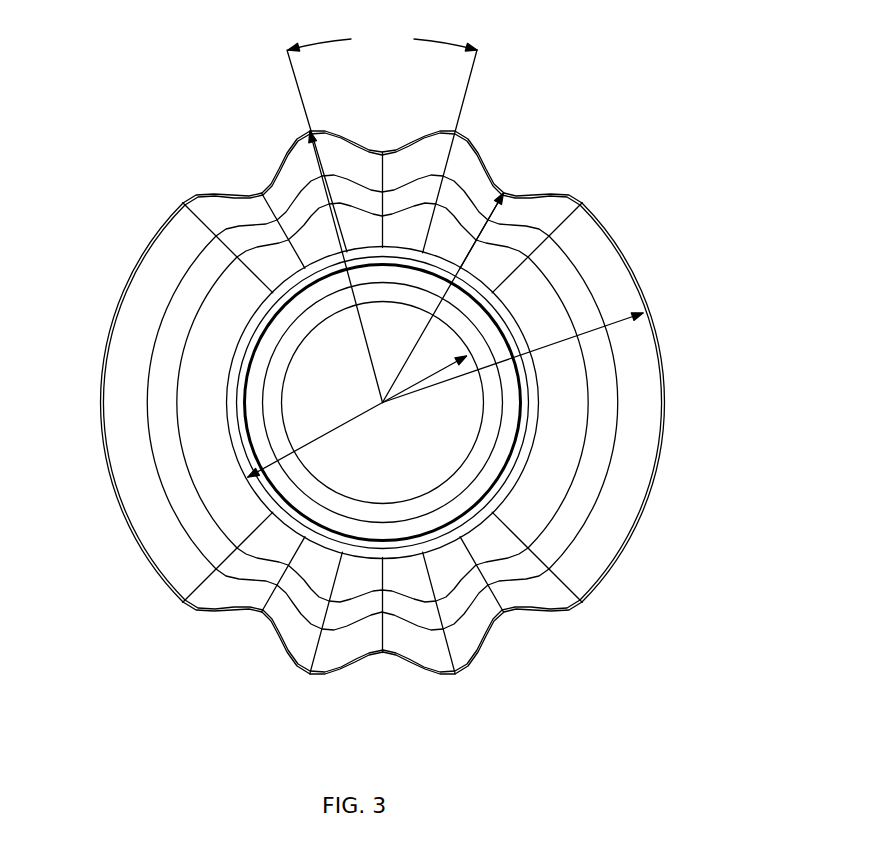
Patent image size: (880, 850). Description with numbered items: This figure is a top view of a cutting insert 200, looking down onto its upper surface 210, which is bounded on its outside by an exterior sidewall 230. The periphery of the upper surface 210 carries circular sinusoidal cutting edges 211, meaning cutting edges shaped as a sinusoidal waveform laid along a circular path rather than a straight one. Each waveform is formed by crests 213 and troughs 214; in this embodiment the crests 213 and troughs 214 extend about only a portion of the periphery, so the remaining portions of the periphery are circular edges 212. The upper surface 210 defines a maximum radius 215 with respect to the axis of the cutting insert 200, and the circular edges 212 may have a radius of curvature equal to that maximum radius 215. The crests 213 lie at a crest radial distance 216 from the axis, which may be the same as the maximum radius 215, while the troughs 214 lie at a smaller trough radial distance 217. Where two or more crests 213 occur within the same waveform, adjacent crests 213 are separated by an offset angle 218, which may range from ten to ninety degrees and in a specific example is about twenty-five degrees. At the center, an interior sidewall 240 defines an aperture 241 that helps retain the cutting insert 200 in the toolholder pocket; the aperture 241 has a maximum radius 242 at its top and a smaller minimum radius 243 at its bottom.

The cutting insert 200 is at (142, 102).
The upper surface 210 is at (138, 280).
The circular sinusoidal cutting edges 211 is at (498, 128).
The circular edges 212 is at (95, 400).
The crests 213 is at (306, 681).
The troughs 214 is at (257, 626).
The maximum radius 215 is at (618, 320).
The crest radial distance 216 is at (373, 367).
The trough radial distance 217 is at (406, 360).
The offset angle 218 is at (382, 142).
The exterior sidewall 230 is at (662, 348).
The interior sidewall 240 is at (463, 456).
The aperture 241 is at (485, 430).
The maximum radius of the aperture 242 is at (340, 427).
The minimum radius of the aperture 243 is at (425, 380).